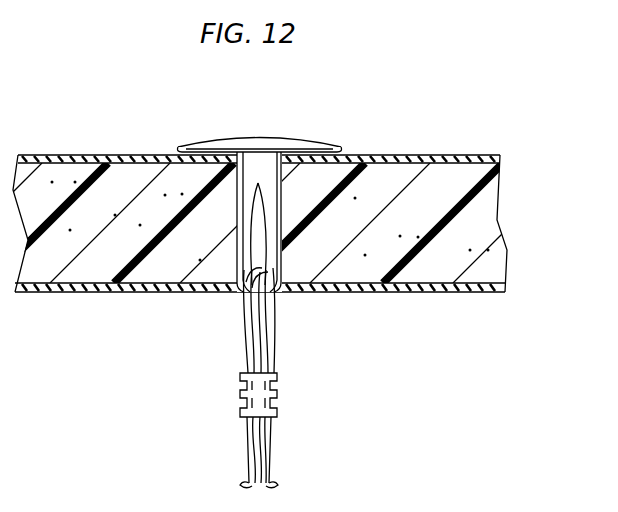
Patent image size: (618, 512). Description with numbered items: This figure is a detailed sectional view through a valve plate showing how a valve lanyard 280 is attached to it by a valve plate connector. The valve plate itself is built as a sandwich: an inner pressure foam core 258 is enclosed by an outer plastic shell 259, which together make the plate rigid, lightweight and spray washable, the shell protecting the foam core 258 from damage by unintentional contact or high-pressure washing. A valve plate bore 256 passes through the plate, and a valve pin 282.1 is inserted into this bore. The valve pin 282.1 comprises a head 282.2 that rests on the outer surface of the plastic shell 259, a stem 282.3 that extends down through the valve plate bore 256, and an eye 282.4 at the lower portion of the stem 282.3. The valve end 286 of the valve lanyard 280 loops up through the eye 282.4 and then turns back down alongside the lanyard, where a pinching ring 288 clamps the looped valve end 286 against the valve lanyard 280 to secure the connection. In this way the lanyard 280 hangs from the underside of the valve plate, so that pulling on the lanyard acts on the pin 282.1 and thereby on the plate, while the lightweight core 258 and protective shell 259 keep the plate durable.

The valve plate bore 256 is at (243, 253).
The inner pressure foam core 258 is at (483, 215).
The outer plastic shell 259 is at (453, 157).
The valve lanyard 280 is at (280, 463).
The valve pin 282.1 is at (250, 195).
The head 282.2 is at (212, 141).
The stem 282.3 is at (256, 165).
The eye 282.4 is at (263, 255).
The valve end 286 is at (243, 330).
The pinching ring 288 is at (280, 398).